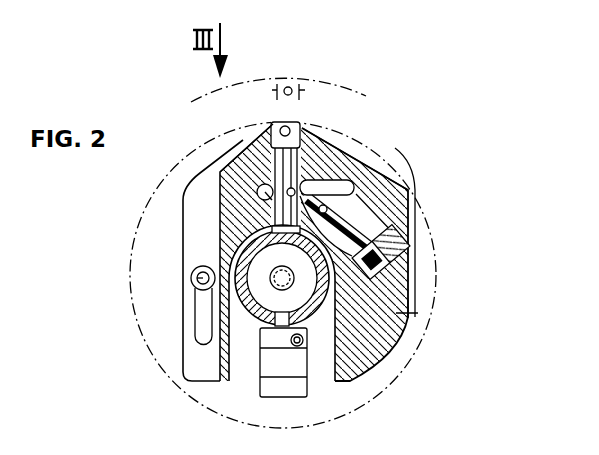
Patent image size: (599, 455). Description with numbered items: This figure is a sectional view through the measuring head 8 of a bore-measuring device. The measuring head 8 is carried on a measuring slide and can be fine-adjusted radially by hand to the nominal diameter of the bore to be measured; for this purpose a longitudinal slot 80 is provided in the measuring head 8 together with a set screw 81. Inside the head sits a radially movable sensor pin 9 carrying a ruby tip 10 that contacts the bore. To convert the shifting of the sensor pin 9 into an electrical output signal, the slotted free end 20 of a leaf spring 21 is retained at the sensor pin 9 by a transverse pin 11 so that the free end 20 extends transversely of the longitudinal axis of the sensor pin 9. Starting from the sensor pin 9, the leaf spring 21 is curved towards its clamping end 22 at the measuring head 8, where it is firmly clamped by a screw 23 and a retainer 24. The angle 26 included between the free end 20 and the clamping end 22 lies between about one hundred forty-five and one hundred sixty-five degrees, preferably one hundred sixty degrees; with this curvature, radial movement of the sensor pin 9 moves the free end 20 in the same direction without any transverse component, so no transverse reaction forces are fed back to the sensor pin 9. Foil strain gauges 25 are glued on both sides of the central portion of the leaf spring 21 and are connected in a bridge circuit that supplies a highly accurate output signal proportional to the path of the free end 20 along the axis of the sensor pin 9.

The measuring head 8 is at (405, 330).
The sensor pin 9 is at (303, 186).
The ruby tip 10 is at (287, 122).
The transverse pin 11 is at (258, 185).
The free end 20 is at (233, 167).
The leaf spring 21 is at (372, 192).
The clamping end 22 is at (412, 312).
The screw 23 is at (409, 244).
The retainer 24 is at (412, 272).
The foil strain gauges 25 is at (350, 228).
The angle 26 is at (355, 345).
The longitudinal slot 80 is at (200, 326).
The set screw 81 is at (192, 281).